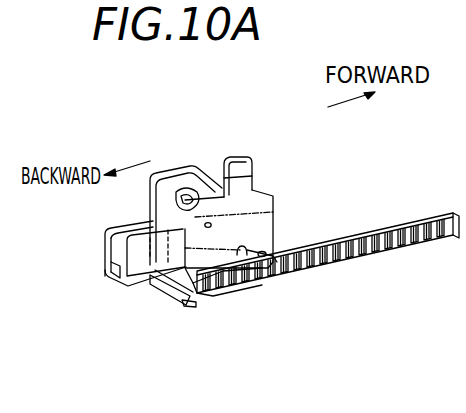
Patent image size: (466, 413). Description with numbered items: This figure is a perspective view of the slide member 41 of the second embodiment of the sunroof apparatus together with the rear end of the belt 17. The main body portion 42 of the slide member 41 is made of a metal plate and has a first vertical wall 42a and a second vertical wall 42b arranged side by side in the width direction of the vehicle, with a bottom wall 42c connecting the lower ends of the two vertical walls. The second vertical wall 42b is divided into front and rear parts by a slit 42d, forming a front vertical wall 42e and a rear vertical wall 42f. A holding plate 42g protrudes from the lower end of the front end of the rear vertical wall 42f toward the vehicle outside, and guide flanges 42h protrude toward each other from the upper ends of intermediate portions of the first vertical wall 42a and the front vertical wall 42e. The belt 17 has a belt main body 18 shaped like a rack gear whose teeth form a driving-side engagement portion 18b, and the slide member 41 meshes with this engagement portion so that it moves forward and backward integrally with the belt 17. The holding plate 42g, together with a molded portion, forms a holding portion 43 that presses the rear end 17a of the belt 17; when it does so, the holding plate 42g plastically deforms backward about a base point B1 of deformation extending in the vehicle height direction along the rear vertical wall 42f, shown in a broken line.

The main body portion 42 is at (276, 190).
The slide member 41 is at (199, 249).
The first vertical wall 42a is at (115, 222).
The second vertical wall 42b is at (159, 332).
The bottom wall 42c is at (108, 264).
The slit 42d is at (184, 168).
The front vertical wall 42e is at (151, 283).
The rear vertical wall 42f is at (113, 291).
The holding plate 42g is at (178, 306).
The holding portion 43 is at (201, 325).
The guide flanges 42h is at (221, 165).
The base point of deformation B1 is at (142, 228).
The belt 17 is at (326, 248).
The rear end of belt 17a is at (194, 300).
The belt main body 18 is at (378, 224).
The driving-side engagement portion 18b is at (263, 285).